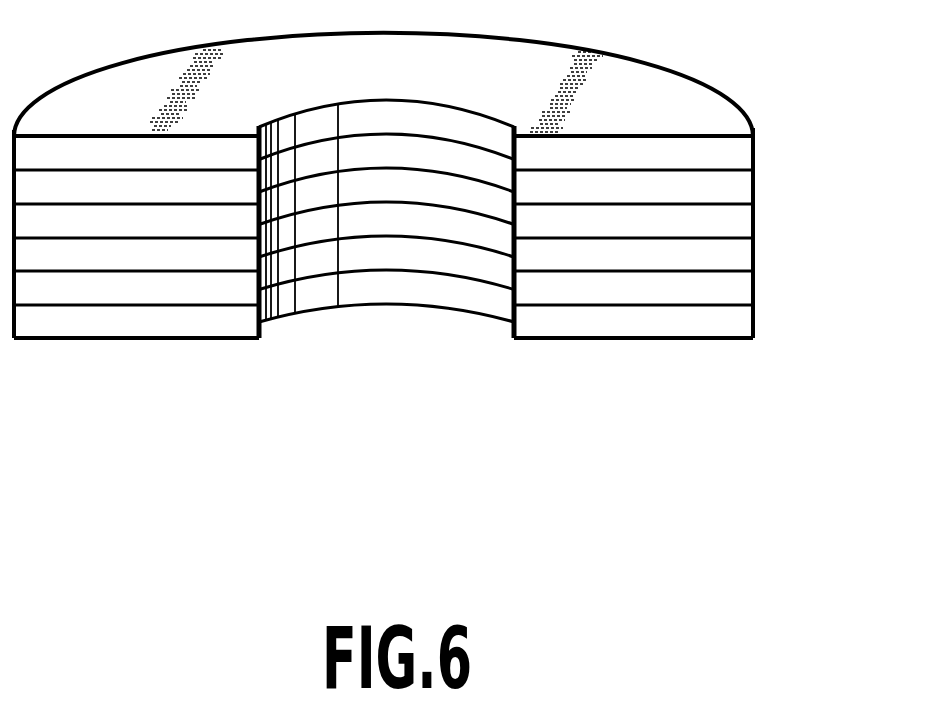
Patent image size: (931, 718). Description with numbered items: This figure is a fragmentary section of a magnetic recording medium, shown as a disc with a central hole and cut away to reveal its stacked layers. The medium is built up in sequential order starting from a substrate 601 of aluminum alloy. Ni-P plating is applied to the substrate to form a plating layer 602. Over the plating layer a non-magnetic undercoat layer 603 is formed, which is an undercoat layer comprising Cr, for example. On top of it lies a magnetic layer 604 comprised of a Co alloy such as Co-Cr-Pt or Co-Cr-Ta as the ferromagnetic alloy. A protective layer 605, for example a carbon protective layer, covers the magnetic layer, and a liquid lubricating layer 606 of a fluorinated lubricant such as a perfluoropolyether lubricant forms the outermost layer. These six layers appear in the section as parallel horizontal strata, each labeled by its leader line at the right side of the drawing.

The substrate 601 is at (750, 320).
The plating layer 602 is at (745, 283).
The non-magnetic undercoat layer 603 is at (745, 250).
The magnetic layer 604 is at (747, 223).
The protective layer 605 is at (745, 190).
The liquid lubricating layer 606 is at (743, 154).